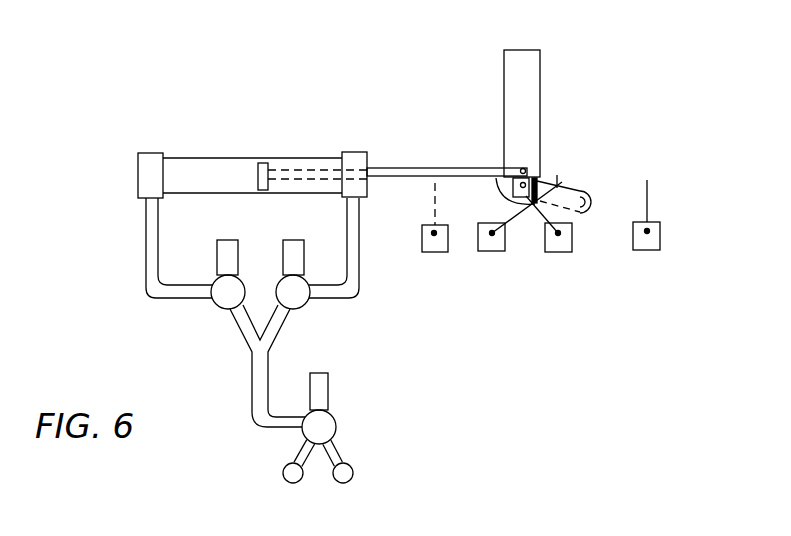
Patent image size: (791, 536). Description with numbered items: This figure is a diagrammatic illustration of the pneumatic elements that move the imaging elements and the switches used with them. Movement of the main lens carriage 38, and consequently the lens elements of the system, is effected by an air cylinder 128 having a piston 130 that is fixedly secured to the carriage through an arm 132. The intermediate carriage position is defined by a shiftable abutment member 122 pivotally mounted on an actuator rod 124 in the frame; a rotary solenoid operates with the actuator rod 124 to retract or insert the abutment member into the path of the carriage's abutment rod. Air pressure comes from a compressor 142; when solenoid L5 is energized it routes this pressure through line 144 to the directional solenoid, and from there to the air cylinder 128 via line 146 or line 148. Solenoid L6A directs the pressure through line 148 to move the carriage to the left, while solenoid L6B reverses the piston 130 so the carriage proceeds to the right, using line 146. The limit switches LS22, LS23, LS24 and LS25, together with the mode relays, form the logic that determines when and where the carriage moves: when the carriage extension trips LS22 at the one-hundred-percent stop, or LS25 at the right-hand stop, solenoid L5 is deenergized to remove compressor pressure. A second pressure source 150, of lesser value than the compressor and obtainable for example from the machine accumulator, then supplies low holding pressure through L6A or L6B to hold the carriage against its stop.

The main lens carriage 38 is at (541, 103).
The shiftable abutment member 122 is at (497, 176).
The actuator rod 124 is at (587, 192).
The air cylinder 128 is at (273, 157).
The piston 130 is at (258, 176).
The arm 132 is at (400, 167).
The compressor 142 is at (347, 464).
The line 144 is at (253, 398).
The line 146 is at (160, 297).
The line 148 is at (359, 275).
The second pressure source 150 is at (291, 464).
The solenoid L5 is at (329, 383).
The solenoid L6A is at (322, 223).
The solenoid L6B is at (240, 222).
The limit switch LS22 is at (430, 252).
The limit switch LS23 is at (548, 252).
The limit switch LS24 is at (488, 252).
The limit switch LS25 is at (640, 250).